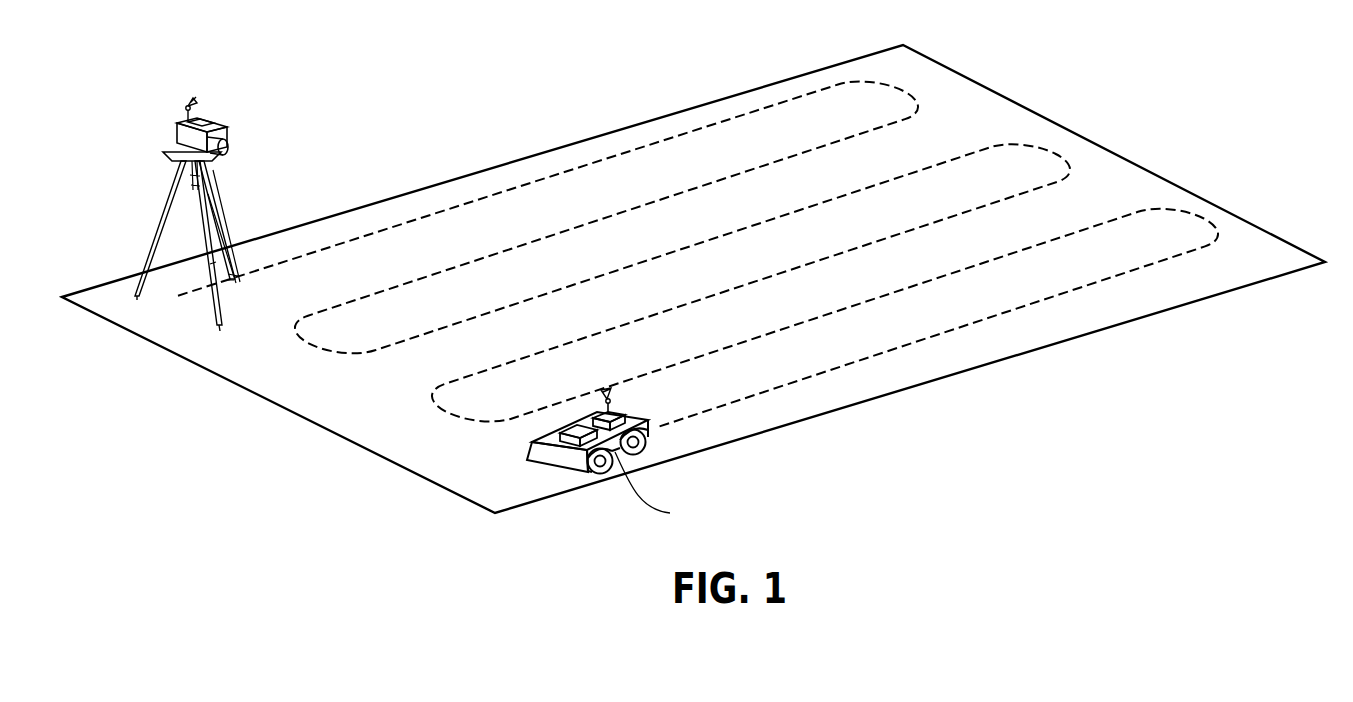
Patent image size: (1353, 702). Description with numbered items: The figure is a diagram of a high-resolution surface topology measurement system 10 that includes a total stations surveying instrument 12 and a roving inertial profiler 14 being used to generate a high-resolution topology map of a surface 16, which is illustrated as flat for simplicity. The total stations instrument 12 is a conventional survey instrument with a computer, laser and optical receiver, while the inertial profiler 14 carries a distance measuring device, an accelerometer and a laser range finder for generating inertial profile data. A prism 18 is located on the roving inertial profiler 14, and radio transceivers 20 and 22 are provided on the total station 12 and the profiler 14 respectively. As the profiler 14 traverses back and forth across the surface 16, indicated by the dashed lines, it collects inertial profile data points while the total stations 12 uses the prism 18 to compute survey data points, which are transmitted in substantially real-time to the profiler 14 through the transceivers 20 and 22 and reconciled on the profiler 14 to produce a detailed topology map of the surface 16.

The high-resolution surface topology measurement system 10 is at (1115, 529).
The total stations surveying instrument 12 is at (212, 195).
The inertial profiler 14 is at (605, 474).
The surface 16 is at (1063, 123).
The prism 18 is at (585, 416).
The radio transceiver 20 is at (193, 100).
The radio transceiver 22 is at (645, 424).